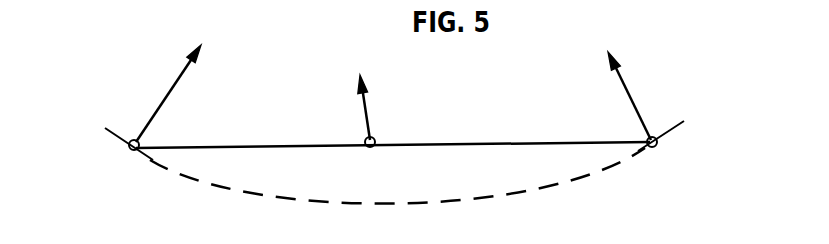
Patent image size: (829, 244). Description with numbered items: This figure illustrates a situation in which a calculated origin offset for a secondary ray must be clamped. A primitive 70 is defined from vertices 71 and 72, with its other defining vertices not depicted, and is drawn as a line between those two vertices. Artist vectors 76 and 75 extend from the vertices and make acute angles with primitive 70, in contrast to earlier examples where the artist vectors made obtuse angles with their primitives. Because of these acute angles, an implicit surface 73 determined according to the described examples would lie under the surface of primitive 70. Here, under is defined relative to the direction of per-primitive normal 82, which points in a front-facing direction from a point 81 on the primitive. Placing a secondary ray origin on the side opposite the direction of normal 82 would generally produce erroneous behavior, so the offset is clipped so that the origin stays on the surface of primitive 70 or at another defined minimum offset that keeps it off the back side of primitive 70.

The primitive 70 is at (393, 122).
The vertex 71 is at (685, 146).
The vertex 72 is at (100, 156).
The implicit surface 73 is at (397, 187).
The artist vector 75 is at (190, 93).
The artist vector 76 is at (648, 96).
The attachment point 81 is at (405, 123).
The per-primitive normal 82 is at (325, 107).